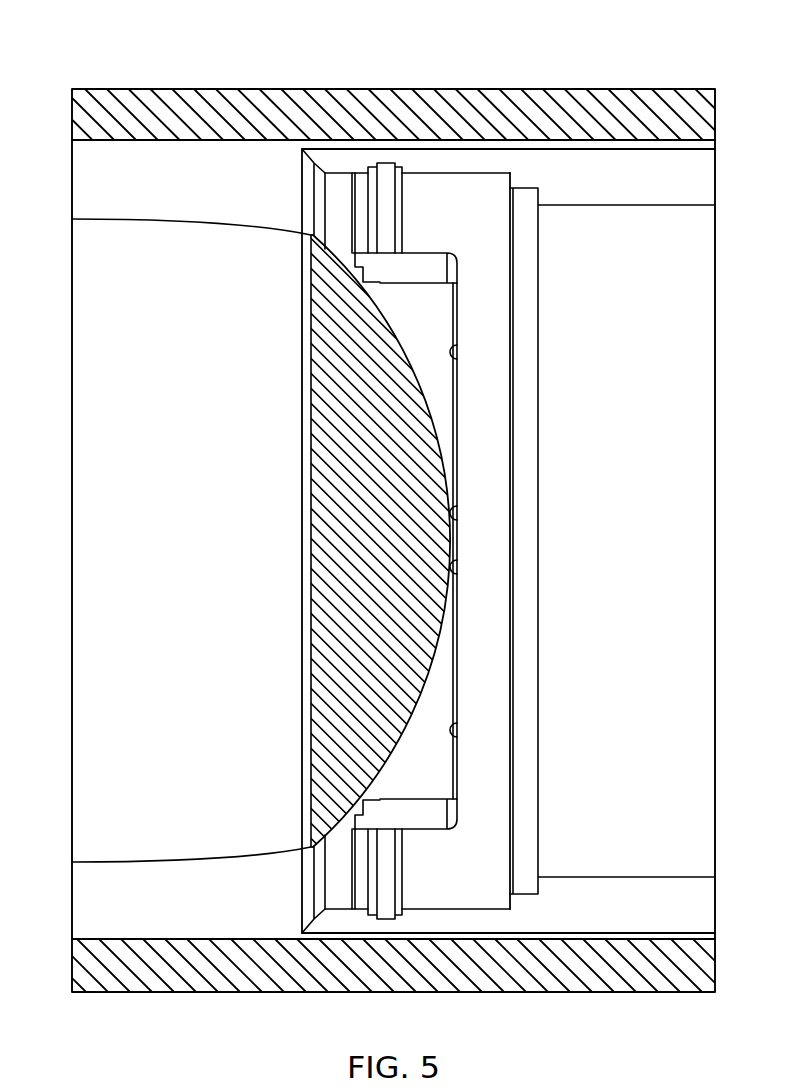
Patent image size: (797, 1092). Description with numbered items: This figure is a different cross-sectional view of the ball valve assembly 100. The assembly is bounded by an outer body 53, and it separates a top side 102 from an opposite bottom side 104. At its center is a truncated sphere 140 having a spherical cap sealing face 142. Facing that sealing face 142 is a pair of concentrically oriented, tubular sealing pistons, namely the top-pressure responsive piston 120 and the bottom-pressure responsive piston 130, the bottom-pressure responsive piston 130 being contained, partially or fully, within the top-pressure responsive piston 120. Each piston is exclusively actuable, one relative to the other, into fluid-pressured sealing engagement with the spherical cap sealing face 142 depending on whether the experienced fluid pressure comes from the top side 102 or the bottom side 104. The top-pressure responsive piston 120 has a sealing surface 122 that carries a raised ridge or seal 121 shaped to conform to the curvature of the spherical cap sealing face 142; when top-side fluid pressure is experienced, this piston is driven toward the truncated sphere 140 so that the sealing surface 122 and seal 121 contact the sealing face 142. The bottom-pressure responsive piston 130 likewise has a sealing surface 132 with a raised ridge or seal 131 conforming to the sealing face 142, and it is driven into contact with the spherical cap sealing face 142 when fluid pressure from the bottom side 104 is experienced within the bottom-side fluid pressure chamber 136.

The ball valve assembly 100 is at (673, 44).
The top-pressure responsive piston 120 is at (345, 158).
The raised ridge or seal 121 is at (322, 223).
The sealing surface 122 is at (314, 189).
The bottom-pressure responsive piston 130 is at (428, 812).
The raised ridge or seal 131 is at (363, 801).
The sealing surface 132 is at (373, 795).
The bottom-side fluid pressure chamber 136 is at (617, 460).
The truncated sphere 140 is at (398, 523).
The spherical cap sealing face 142 is at (400, 333).
The top side 102 is at (48, 567).
The bottom side 104 is at (774, 565).
The outer body 53 is at (616, 975).